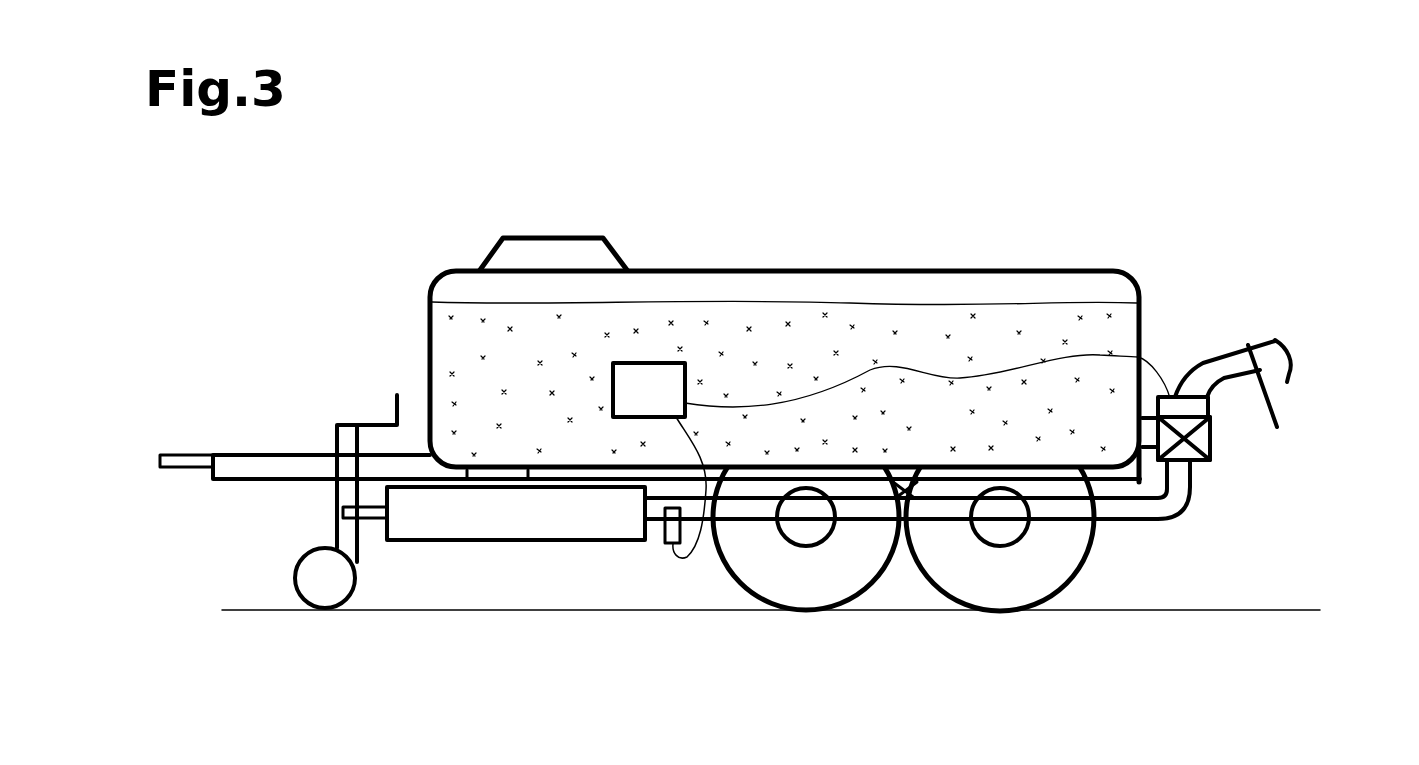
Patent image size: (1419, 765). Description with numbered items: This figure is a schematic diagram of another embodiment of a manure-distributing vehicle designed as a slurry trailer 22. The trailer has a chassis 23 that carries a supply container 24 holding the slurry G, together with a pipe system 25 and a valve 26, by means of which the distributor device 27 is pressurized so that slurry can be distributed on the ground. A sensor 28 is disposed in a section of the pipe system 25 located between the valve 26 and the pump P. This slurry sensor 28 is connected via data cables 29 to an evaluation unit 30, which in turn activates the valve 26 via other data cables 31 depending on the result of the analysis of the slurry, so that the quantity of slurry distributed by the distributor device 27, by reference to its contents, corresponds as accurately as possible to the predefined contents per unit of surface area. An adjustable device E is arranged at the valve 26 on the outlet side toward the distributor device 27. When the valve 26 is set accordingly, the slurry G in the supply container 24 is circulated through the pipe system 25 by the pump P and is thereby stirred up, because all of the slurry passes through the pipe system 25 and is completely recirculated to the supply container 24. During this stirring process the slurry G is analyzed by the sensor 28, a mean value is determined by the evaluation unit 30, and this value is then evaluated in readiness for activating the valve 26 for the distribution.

The slurry trailer 22 is at (376, 382).
The chassis 23 is at (287, 467).
The supply container 24 is at (800, 268).
The pipe system 25 is at (1128, 508).
The valve 26 is at (1205, 436).
The distributor device 27 is at (1270, 402).
The sensor 28 is at (670, 530).
The data cables 29 is at (703, 463).
The evaluation unit 30 is at (649, 390).
The data cables 31 is at (915, 370).
The adjustable device E is at (1173, 405).
The slurry G is at (539, 361).
The pump P is at (497, 518).